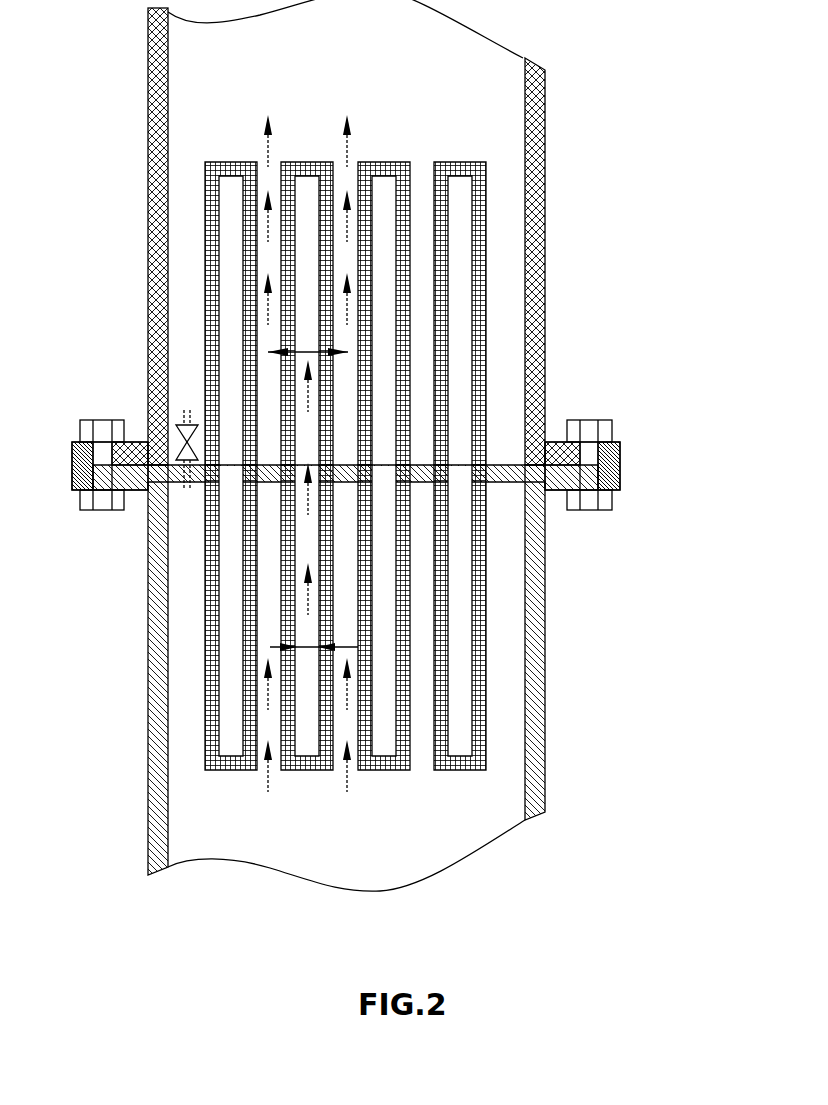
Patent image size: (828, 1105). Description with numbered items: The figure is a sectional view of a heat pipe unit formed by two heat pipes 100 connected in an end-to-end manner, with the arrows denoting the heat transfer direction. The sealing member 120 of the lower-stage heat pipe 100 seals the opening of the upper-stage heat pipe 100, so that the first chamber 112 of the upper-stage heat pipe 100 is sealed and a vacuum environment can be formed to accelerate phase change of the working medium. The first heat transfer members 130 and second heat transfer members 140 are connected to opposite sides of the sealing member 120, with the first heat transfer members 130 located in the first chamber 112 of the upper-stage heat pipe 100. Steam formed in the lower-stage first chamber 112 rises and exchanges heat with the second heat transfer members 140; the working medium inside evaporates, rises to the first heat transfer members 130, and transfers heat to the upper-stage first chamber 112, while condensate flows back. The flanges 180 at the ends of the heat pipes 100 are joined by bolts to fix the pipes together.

The heat pipe 100 is at (545, 215).
The first chamber 112 is at (482, 120).
The sealing member 120 is at (505, 453).
The first heat transfer member 130 is at (483, 347).
The second heat transfer member 140 is at (487, 682).
The flange 180 is at (562, 452).